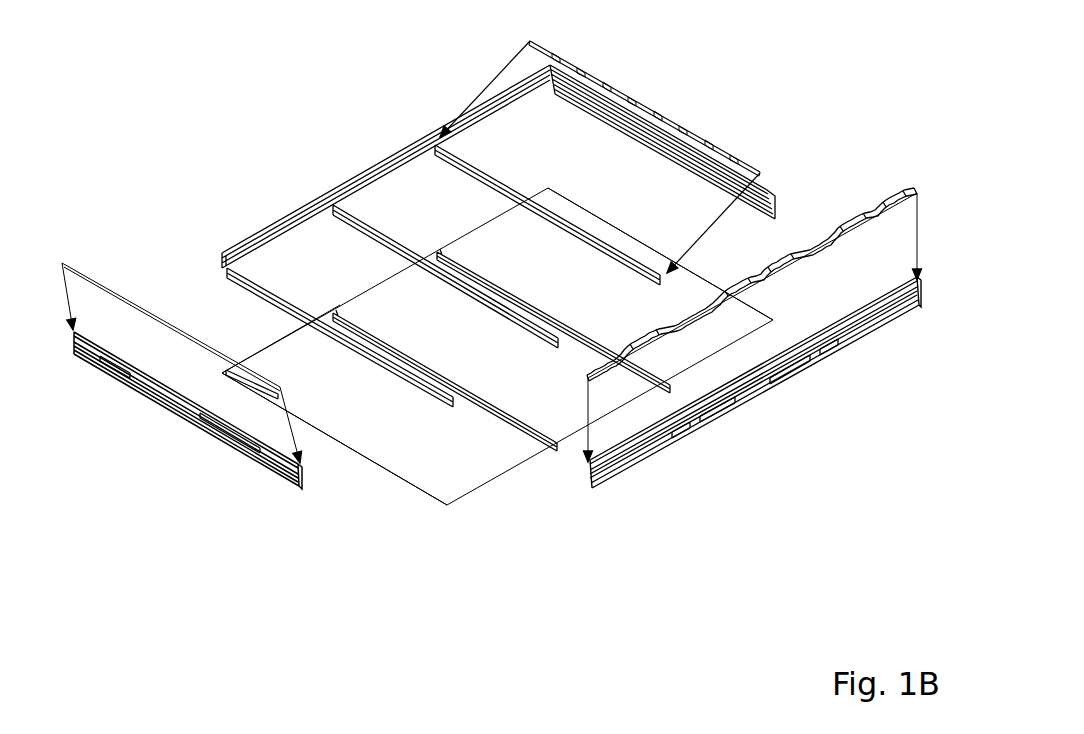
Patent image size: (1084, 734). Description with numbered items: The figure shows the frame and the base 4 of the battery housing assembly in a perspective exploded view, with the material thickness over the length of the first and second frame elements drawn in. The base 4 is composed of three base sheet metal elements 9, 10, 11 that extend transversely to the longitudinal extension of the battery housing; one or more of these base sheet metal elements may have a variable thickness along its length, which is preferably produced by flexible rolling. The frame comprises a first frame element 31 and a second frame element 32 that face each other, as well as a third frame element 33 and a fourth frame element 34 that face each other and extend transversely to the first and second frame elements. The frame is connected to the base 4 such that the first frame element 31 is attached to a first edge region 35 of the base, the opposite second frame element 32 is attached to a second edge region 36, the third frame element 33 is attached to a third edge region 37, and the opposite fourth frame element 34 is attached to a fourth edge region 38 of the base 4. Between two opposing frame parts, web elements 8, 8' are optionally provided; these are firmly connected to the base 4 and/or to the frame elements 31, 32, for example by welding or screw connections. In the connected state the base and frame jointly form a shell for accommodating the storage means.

The base 4 is at (478, 472).
The web element 8 is at (340, 328).
The web element 8' is at (445, 265).
The base sheet metal element 9 is at (407, 438).
The base sheet metal element 10 is at (473, 355).
The base sheet metal element 11 is at (564, 292).
The first frame element 31 is at (268, 212).
The second frame element 32 is at (787, 377).
The third frame element 33 is at (776, 187).
The fourth frame element 34 is at (185, 408).
The first edge region 35 is at (281, 340).
The second edge region 36 is at (620, 407).
The third edge region 37 is at (700, 278).
The fourth edge region 38 is at (368, 462).